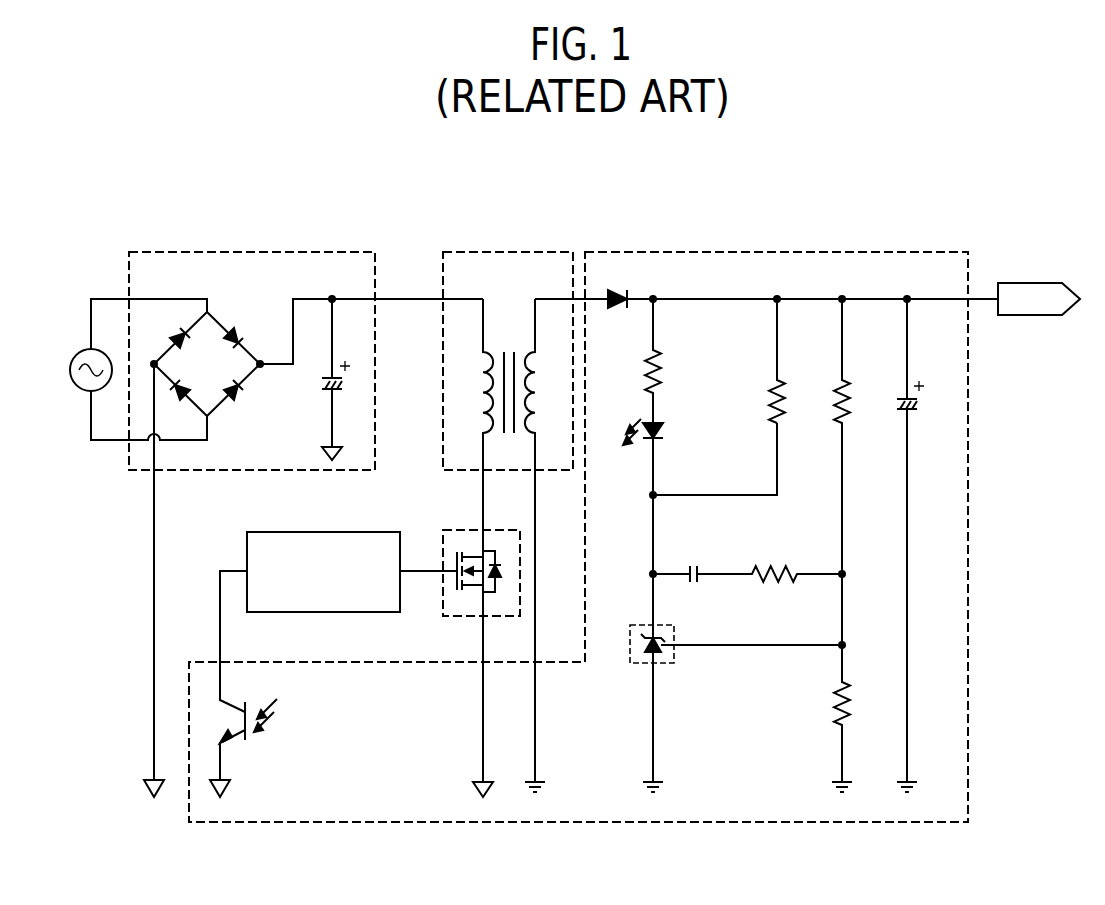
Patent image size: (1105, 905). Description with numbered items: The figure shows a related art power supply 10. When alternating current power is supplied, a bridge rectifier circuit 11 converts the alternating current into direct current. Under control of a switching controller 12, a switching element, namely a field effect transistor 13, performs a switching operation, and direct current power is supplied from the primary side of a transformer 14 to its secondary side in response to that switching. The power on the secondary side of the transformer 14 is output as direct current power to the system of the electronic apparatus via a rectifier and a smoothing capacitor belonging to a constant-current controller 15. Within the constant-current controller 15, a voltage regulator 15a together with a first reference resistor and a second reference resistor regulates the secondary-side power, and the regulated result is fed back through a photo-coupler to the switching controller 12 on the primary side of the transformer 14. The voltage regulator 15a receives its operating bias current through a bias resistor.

The power supply 10 is at (952, 205).
The bridge rectifier circuit 11 is at (244, 252).
The switching controller 12 is at (247, 548).
The field effect transistor (FET) 13 is at (463, 616).
The transformer 14 is at (506, 252).
The constant-current controller 15 is at (776, 252).
The voltage regulator 15a is at (674, 664).